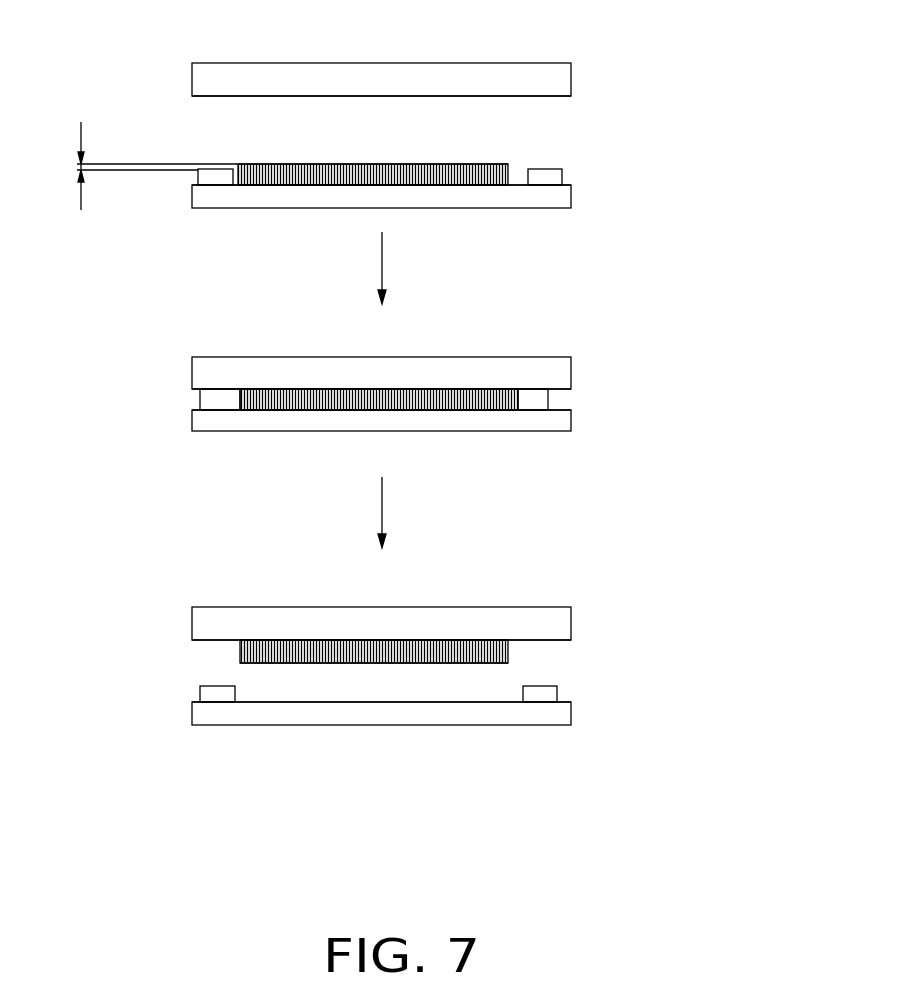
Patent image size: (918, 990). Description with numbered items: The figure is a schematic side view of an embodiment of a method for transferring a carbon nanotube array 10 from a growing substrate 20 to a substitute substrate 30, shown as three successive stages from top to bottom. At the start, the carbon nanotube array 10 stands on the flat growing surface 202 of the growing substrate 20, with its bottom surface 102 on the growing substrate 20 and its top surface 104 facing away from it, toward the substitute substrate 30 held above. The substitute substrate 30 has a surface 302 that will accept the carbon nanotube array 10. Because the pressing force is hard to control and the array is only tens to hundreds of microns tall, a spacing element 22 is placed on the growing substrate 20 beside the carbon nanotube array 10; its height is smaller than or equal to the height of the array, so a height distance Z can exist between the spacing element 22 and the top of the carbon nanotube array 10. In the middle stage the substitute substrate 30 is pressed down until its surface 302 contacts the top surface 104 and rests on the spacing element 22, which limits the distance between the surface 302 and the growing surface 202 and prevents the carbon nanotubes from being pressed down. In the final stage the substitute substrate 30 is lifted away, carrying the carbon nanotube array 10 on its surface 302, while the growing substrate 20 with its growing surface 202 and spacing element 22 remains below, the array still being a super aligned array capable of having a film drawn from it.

The carbon nanotube array 10 is at (455, 168).
The bottom surface 102 is at (250, 186).
The top surface 104 is at (245, 165).
The growing substrate 20 is at (569, 197).
The growing surface 202 is at (325, 186).
The spacing element 22 is at (555, 175).
The substitute substrate 30 is at (545, 72).
The surface 302 is at (222, 97).
The height distance Z is at (150, 166).